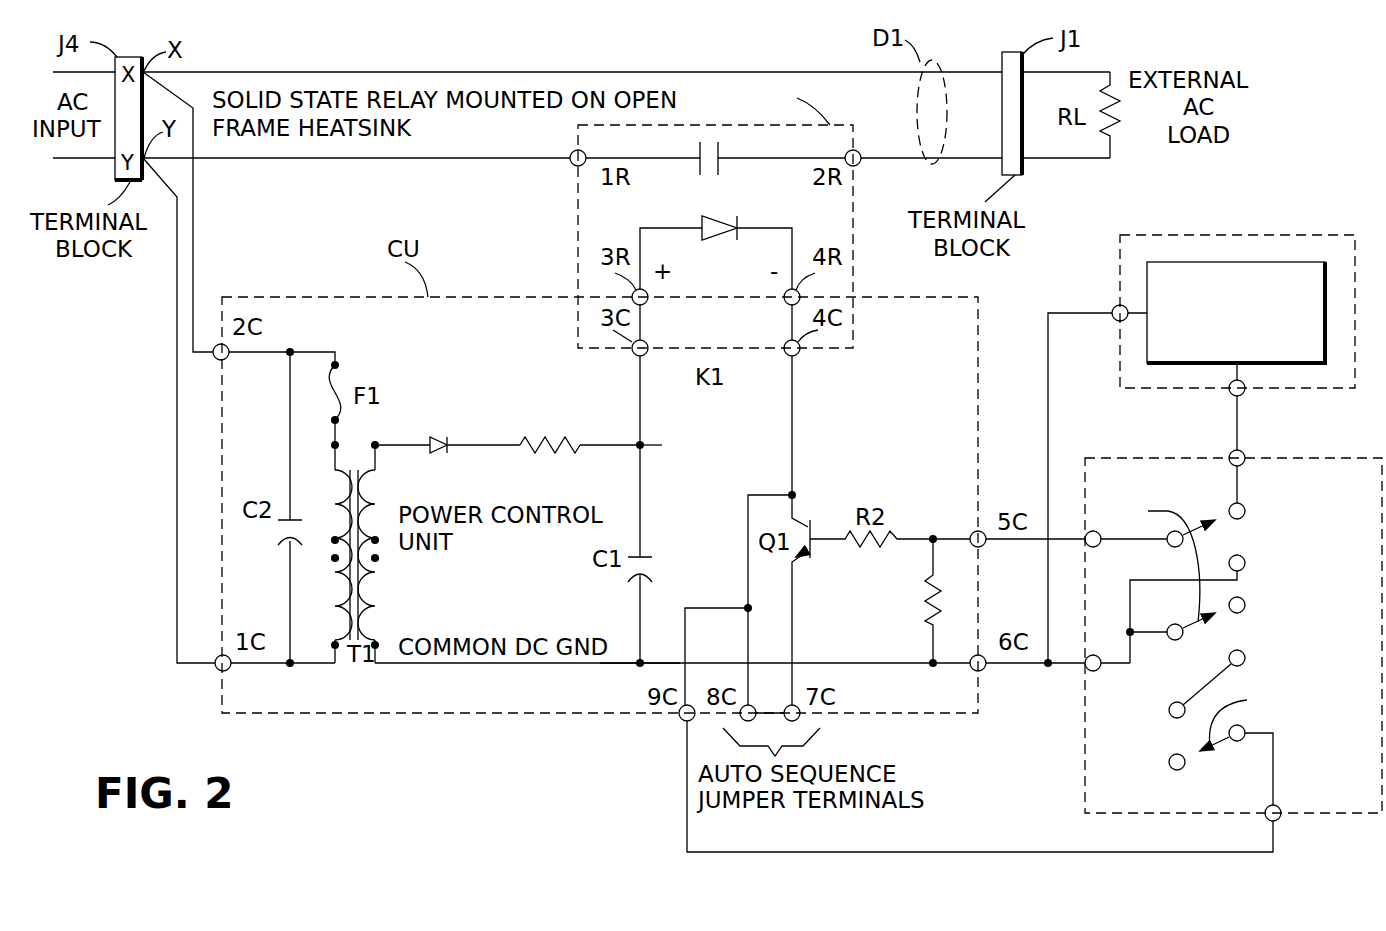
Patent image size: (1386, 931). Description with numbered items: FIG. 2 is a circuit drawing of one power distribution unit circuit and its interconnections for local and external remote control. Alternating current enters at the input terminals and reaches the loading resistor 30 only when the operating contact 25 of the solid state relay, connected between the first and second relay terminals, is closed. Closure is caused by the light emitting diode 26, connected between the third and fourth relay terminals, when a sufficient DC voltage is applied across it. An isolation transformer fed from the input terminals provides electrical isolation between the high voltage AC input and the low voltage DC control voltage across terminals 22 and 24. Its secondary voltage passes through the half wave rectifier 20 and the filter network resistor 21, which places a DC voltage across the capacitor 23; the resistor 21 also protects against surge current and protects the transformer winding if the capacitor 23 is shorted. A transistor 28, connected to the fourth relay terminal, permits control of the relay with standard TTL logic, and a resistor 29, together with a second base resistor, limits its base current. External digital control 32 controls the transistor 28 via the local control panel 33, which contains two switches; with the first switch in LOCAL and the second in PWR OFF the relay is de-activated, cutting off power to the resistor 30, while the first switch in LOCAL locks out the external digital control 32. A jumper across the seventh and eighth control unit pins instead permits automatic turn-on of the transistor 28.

The half wave rectifier 20 is at (437, 437).
The filter network resistor 21 is at (535, 437).
The terminal 22 is at (662, 445).
The capacitor 23 is at (655, 557).
The terminal 24 is at (640, 668).
The operating contact 25 is at (722, 168).
The light emitting diode 26 is at (725, 238).
The transistor 28 is at (818, 516).
The resistor 29 is at (928, 594).
The loading resistor 30 is at (1117, 114).
The external digital control 32 is at (1285, 235).
The local control panel 33 is at (1145, 457).